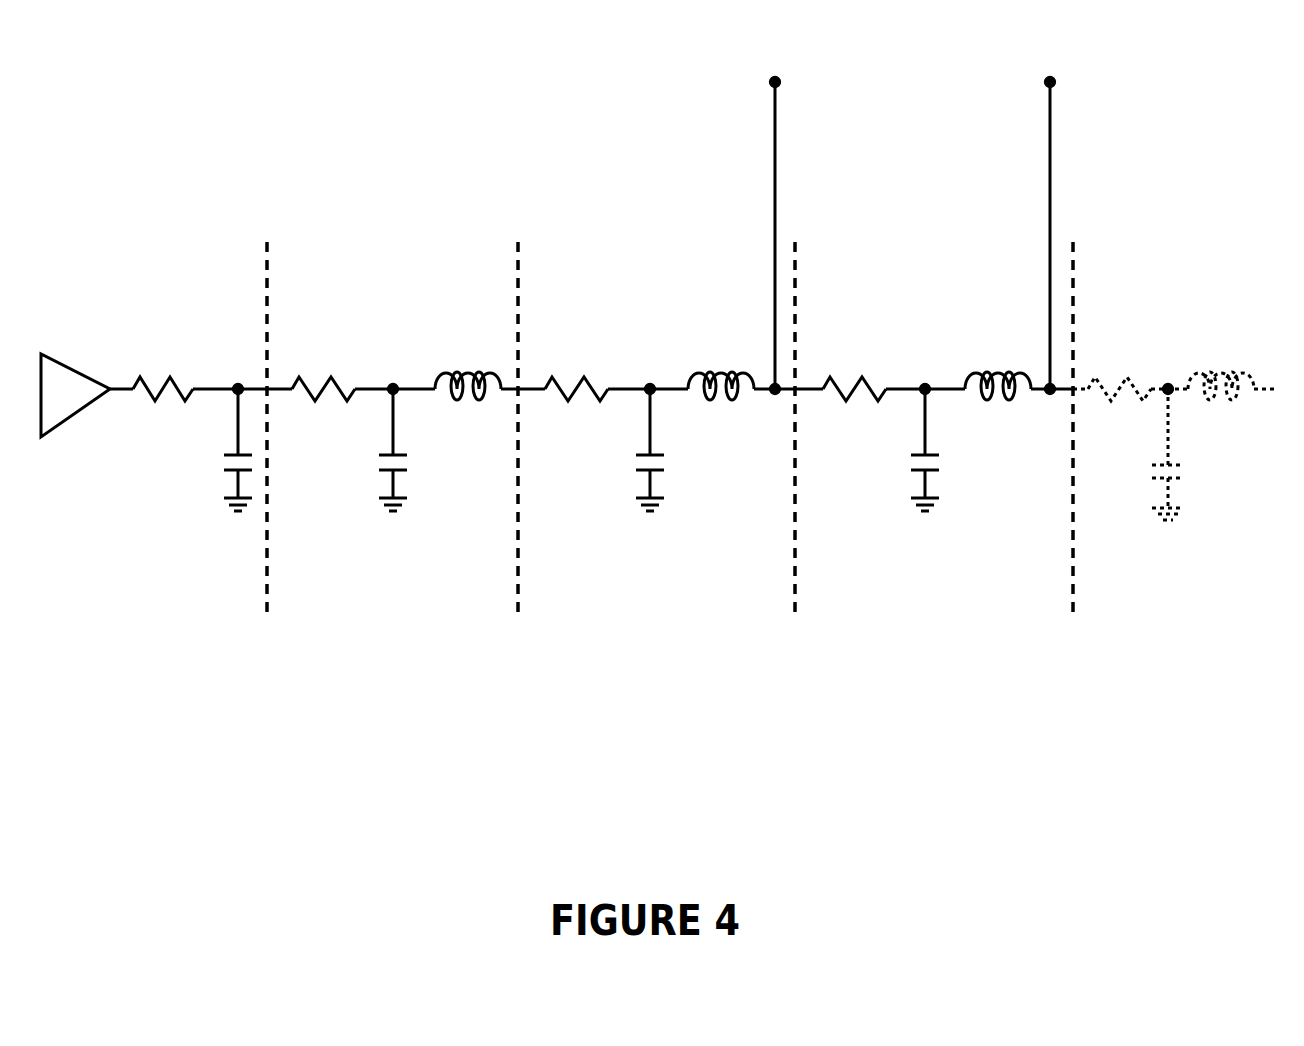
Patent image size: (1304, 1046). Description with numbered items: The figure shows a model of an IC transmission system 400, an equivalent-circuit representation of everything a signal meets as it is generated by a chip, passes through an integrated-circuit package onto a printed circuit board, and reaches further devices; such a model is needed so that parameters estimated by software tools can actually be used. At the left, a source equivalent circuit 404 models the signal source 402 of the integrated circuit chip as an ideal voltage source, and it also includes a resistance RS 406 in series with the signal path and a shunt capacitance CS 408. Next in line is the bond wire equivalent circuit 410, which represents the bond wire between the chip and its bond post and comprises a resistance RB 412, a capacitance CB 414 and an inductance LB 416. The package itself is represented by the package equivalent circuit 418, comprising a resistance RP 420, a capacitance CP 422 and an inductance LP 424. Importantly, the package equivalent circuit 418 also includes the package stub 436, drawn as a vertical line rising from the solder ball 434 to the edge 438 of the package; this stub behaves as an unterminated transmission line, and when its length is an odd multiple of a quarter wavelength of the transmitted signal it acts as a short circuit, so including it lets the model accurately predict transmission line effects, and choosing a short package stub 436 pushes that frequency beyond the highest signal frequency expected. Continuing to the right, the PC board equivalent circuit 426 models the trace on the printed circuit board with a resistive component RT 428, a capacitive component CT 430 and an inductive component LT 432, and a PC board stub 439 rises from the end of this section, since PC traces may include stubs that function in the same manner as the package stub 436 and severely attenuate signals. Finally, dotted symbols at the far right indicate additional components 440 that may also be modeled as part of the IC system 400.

The IC transmission system 400 is at (432, 704).
The signal source 402 is at (76, 368).
The source equivalent circuit 404 is at (205, 515).
The resistance (RS) 406 is at (184, 387).
The capacitance (CS) 408 is at (230, 455).
The bond wire equivalent circuit 410 is at (446, 515).
The resistance (RB) 412 is at (322, 385).
The capacitance (CB) 414 is at (386, 455).
The inductance (LB) 416 is at (487, 375).
The package equivalent circuit 418 is at (706, 517).
The resistance (RP) 420 is at (590, 385).
The capacitance (CP) 422 is at (641, 455).
The inductance (LP) 424 is at (746, 380).
The PC board equivalent circuit 426 is at (923, 533).
The resistive component (RT) 428 is at (877, 385).
The capacitive component (CT) 430 is at (918, 455).
The inductive component (LT) 432 is at (1010, 385).
The solder ball 434 is at (776, 393).
The package stub 436 is at (777, 140).
The edge 438 is at (775, 82).
The PC board stub 439 is at (1052, 146).
The additional components 440 is at (1143, 525).